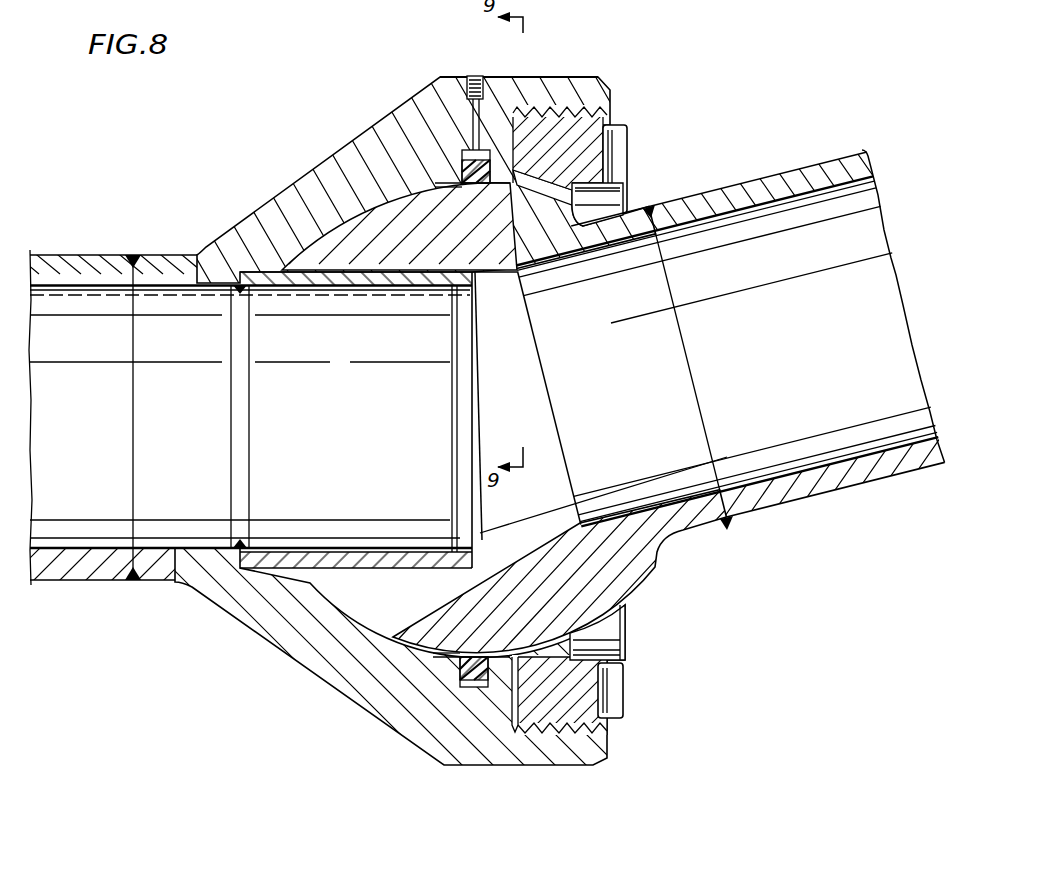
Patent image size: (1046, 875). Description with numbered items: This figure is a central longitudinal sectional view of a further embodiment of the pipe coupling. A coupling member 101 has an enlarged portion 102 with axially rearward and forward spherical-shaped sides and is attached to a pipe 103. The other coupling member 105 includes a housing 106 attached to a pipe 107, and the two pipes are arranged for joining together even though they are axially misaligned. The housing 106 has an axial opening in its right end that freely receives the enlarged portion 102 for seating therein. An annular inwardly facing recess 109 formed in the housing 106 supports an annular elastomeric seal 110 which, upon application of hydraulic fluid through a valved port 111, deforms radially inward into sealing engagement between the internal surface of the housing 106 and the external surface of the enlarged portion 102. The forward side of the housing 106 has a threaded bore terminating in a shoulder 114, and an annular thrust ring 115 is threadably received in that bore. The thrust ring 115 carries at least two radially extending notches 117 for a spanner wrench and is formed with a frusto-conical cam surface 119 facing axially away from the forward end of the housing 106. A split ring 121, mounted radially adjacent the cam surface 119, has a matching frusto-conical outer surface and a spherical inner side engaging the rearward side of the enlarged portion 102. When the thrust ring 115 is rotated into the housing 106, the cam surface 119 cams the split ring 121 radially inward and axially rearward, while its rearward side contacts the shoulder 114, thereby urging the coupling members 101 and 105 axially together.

The coupling member 101 is at (699, 538).
The enlarged portion 102 is at (484, 285).
The pipe 103 is at (846, 487).
The coupling member 105 is at (273, 197).
The housing 106 is at (457, 94).
The pipe 107 is at (78, 253).
The annular inwardly facing recess 109 is at (503, 120).
The annular elastomeric seal 110 is at (440, 112).
The valved port 111 is at (470, 58).
The shoulder 114 is at (565, 102).
The annular thrust ring 115 is at (610, 96).
The radially extending notches 117 is at (625, 142).
The frusto-conical cam surface 119 is at (628, 184).
The split ring 121 is at (522, 183).